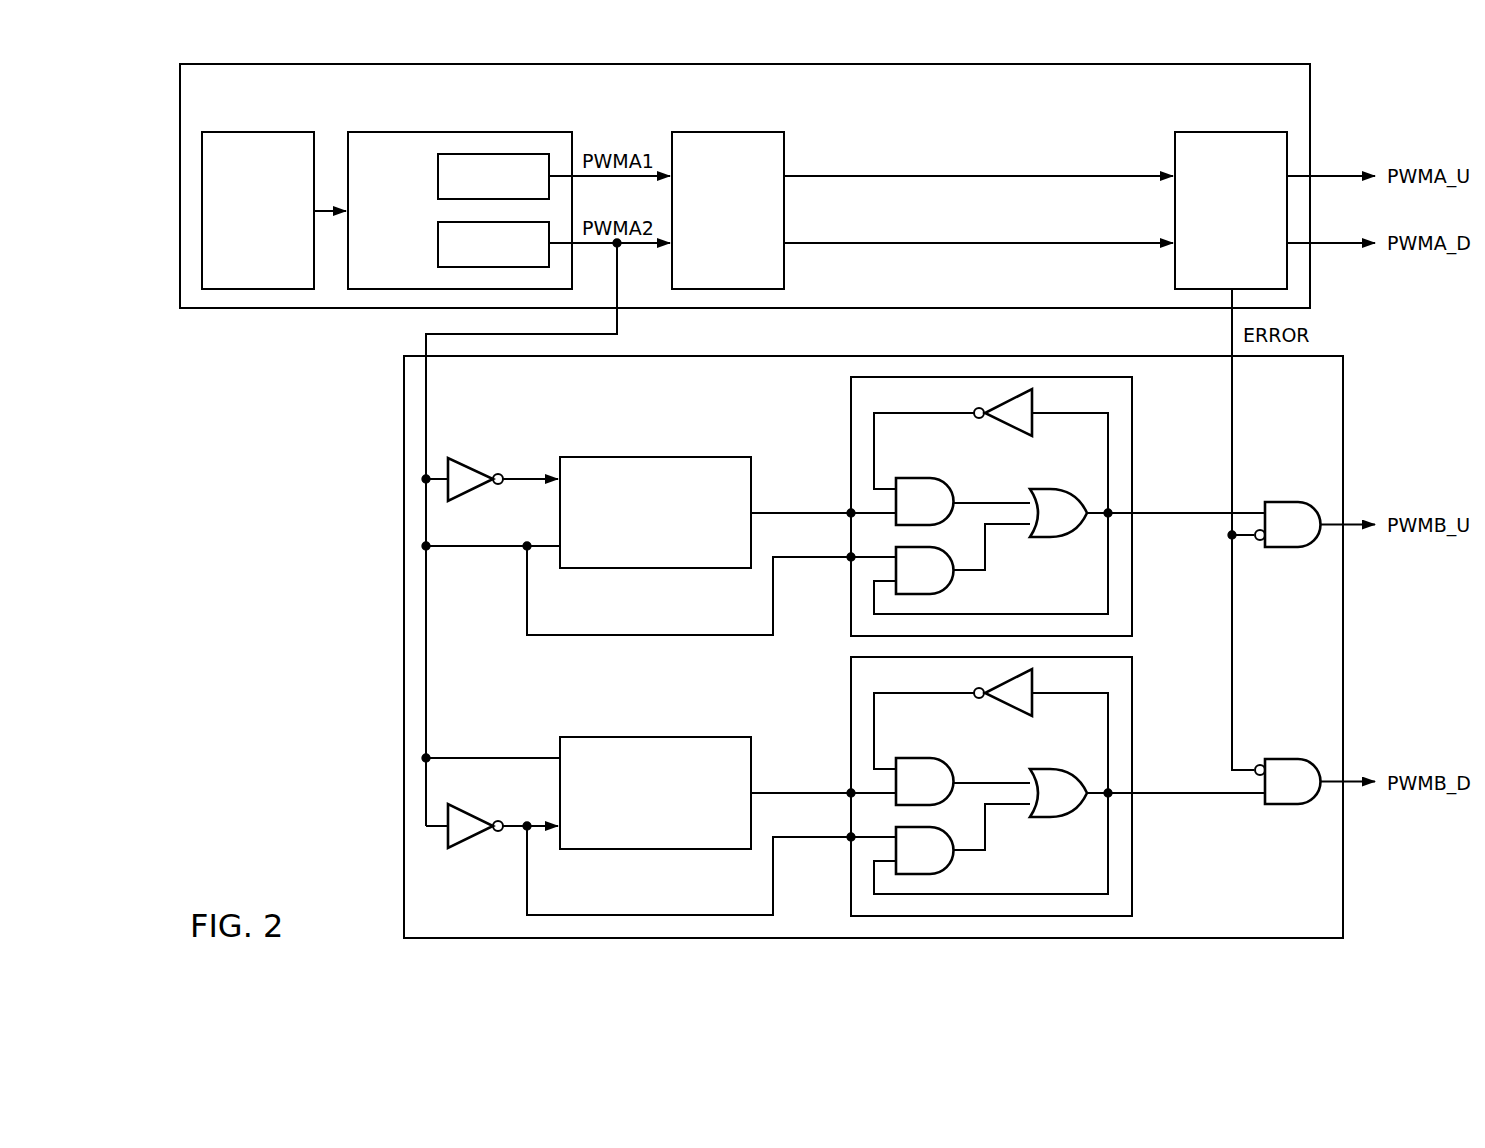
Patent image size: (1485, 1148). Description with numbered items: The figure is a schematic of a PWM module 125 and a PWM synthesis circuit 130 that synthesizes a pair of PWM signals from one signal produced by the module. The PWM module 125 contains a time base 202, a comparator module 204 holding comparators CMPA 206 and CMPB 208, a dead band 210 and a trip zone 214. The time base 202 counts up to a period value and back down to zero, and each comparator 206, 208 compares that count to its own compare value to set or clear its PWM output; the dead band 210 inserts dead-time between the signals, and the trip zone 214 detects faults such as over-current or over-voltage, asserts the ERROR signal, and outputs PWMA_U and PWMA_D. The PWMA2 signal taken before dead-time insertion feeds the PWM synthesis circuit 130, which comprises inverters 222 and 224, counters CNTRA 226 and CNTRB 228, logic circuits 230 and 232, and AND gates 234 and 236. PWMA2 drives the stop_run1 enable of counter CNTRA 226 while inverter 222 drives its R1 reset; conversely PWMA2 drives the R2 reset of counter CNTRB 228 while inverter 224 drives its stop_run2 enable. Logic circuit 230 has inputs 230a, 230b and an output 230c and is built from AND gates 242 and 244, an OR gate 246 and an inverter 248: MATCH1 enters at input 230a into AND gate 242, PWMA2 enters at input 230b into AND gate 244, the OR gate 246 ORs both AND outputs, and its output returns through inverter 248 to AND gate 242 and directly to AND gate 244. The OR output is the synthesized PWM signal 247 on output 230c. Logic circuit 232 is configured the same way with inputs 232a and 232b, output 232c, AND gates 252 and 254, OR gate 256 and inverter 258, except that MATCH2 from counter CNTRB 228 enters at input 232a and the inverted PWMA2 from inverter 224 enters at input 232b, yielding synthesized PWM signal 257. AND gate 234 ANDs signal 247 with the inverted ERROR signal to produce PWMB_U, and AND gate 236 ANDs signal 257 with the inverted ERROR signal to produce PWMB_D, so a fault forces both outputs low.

The PWM module 125 is at (178, 163).
The PWM synthesis circuit 130 is at (400, 681).
The time base 202 is at (262, 132).
The comparator module 204 is at (423, 130).
The comparator CMPA 206 is at (437, 165).
The comparator CMPB 208 is at (437, 233).
The dead band 210 is at (728, 132).
The trip zone 214 is at (1243, 132).
The inverter 222 is at (470, 468).
The inverter 224 is at (470, 838).
The counter CNTRA 226 is at (655, 570).
The counter CNTRB 228 is at (655, 851).
The logic circuit 230 is at (1136, 445).
The logic circuit input 230a is at (848, 510).
The logic circuit input 230b is at (848, 562).
The logic circuit output 230c is at (1104, 510).
The logic circuit 232 is at (1136, 862).
The logic circuit input 232a is at (848, 790).
The logic circuit input 232b is at (848, 842).
The logic circuit output 232c is at (1104, 790).
The AND gate 234 is at (1290, 549).
The AND gate 236 is at (1290, 806).
The AND gate 242 is at (918, 478).
The AND gate 244 is at (955, 579).
The OR gate 246 is at (1058, 538).
The synthesized PWM signal 247 is at (1175, 512).
The inverter 248 is at (1008, 425).
The AND gate 252 is at (918, 758).
The AND gate 254 is at (955, 859).
The OR gate 256 is at (1058, 818).
The synthesized PWM signal 257 is at (1185, 797).
The inverter 258 is at (1008, 705).